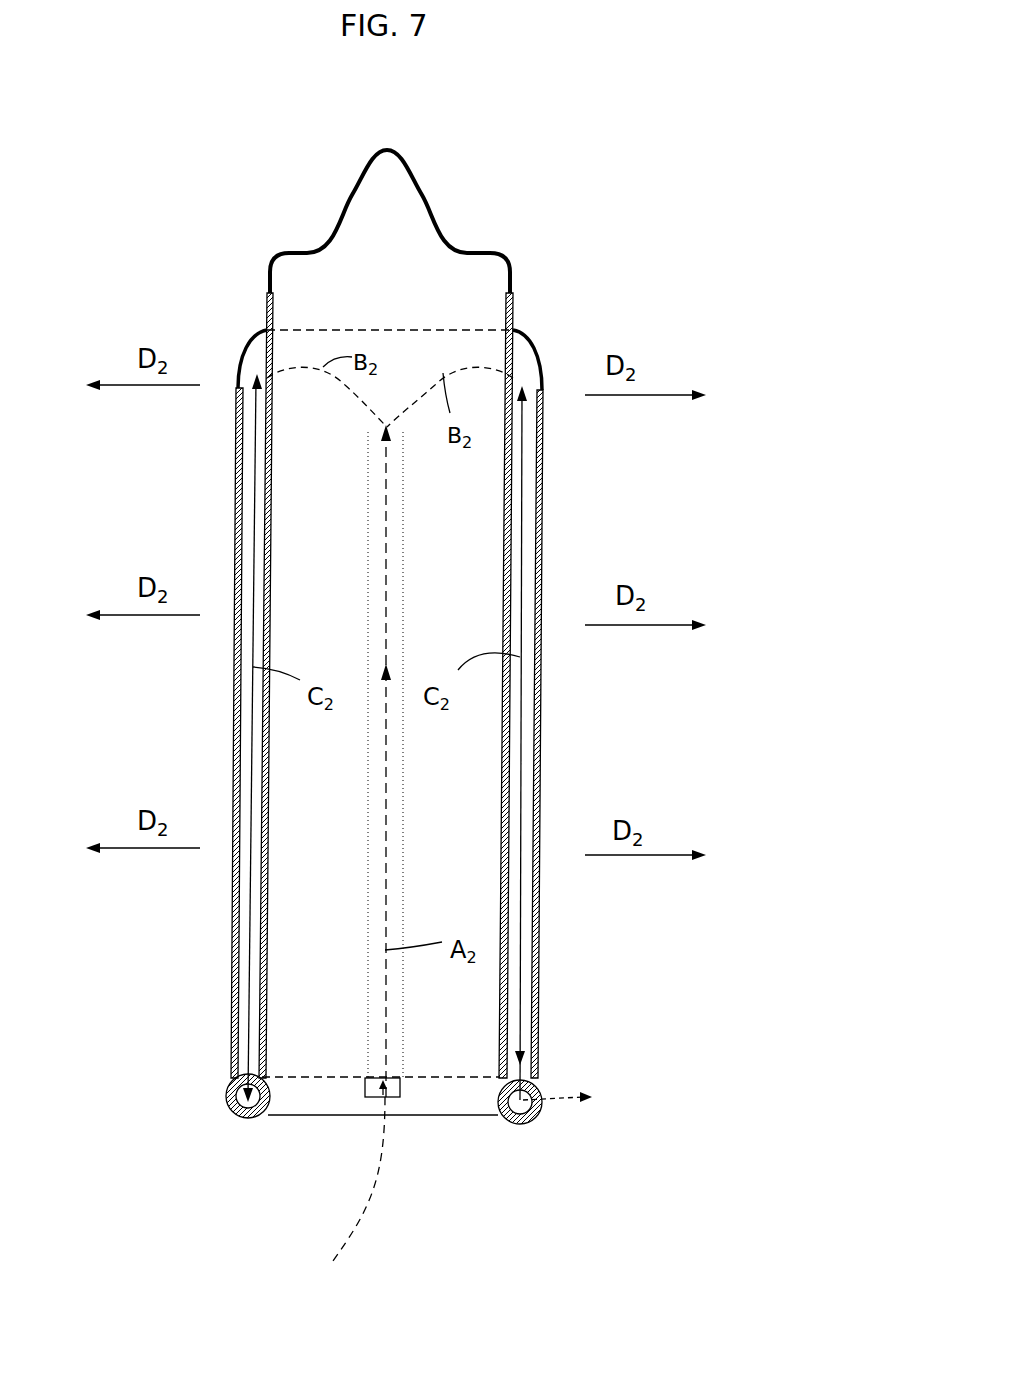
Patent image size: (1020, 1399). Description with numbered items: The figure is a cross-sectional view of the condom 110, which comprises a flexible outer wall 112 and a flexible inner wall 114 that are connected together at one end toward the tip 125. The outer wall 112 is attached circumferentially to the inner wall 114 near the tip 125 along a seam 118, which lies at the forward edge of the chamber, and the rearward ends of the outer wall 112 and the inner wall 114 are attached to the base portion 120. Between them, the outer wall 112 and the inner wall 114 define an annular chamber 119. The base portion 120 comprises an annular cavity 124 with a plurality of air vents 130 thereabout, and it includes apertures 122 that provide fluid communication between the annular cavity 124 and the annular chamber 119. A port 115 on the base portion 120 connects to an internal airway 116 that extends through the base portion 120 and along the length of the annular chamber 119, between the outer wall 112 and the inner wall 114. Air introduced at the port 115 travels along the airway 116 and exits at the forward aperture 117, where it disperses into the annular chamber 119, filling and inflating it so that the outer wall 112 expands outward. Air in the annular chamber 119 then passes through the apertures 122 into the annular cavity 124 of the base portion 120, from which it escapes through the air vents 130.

The condom 110 is at (620, 175).
The flexible outer wall 112 is at (235, 525).
The flexible inner wall 114 is at (273, 559).
The port 115 is at (400, 1088).
The internal airway 116 is at (367, 810).
The forward aperture 117 is at (377, 423).
The seam 118 is at (453, 331).
The annular chamber 119 is at (245, 922).
The base portion 120 is at (227, 1105).
The apertures 122 is at (245, 1072).
The annular cavity 124 is at (263, 1110).
The tip 125 is at (433, 170).
The air vents 130 is at (533, 1108).